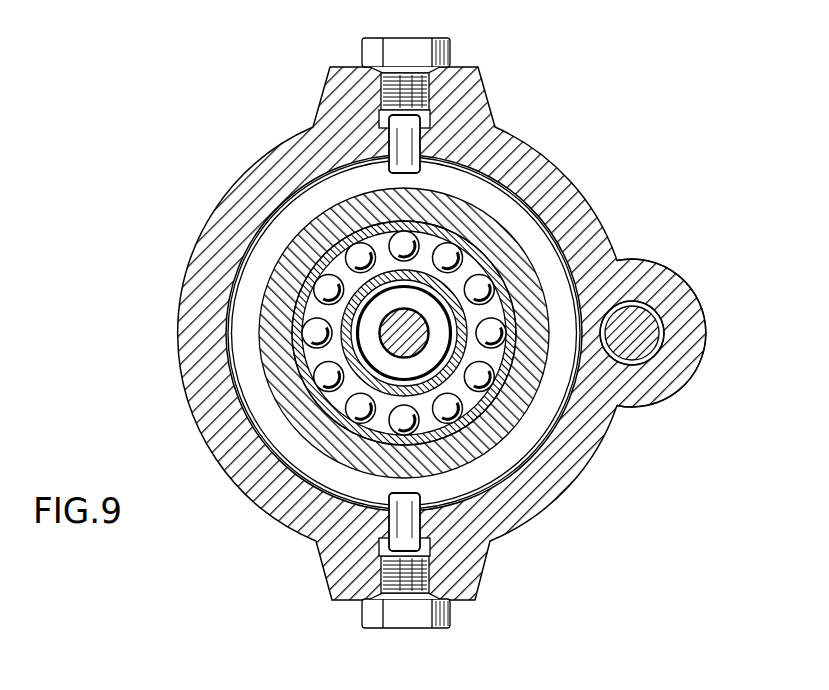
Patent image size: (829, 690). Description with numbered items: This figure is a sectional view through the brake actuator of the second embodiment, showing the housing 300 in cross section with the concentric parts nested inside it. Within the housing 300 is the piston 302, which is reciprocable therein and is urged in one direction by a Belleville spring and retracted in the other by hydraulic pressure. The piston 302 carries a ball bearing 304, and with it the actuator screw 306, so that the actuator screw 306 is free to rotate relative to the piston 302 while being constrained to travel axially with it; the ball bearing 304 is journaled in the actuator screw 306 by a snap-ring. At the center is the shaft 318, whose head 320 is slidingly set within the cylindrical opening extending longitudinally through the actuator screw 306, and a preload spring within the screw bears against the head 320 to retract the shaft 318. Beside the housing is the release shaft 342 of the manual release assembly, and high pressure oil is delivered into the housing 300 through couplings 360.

The housing 300 is at (507, 538).
The piston 302 is at (493, 412).
The ball bearing 304 is at (500, 412).
The actuator screw 306 is at (452, 338).
The shaft 318 is at (418, 336).
The head 320 is at (394, 294).
The release shaft 342 is at (650, 338).
The couplings 360 is at (450, 50).